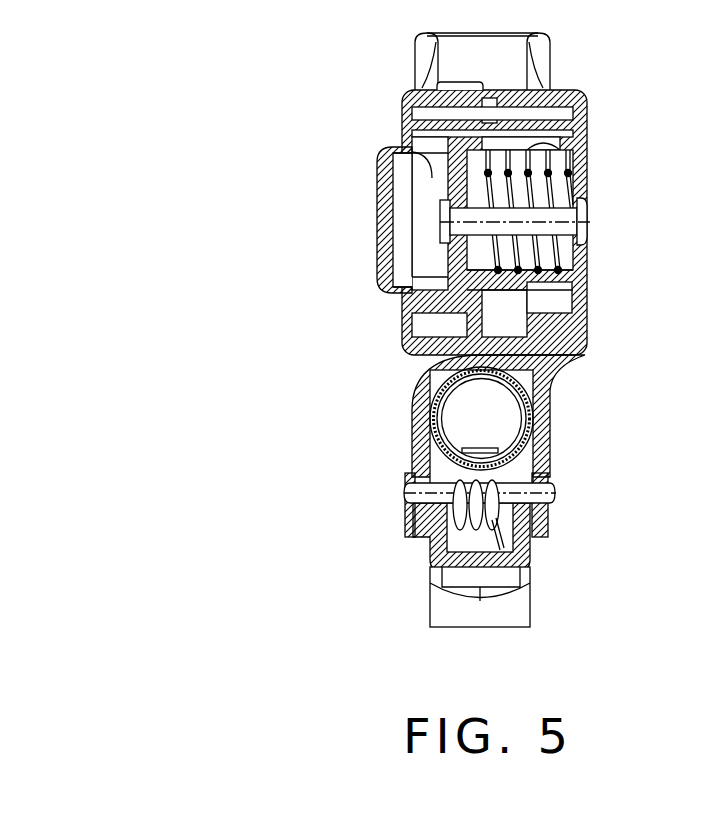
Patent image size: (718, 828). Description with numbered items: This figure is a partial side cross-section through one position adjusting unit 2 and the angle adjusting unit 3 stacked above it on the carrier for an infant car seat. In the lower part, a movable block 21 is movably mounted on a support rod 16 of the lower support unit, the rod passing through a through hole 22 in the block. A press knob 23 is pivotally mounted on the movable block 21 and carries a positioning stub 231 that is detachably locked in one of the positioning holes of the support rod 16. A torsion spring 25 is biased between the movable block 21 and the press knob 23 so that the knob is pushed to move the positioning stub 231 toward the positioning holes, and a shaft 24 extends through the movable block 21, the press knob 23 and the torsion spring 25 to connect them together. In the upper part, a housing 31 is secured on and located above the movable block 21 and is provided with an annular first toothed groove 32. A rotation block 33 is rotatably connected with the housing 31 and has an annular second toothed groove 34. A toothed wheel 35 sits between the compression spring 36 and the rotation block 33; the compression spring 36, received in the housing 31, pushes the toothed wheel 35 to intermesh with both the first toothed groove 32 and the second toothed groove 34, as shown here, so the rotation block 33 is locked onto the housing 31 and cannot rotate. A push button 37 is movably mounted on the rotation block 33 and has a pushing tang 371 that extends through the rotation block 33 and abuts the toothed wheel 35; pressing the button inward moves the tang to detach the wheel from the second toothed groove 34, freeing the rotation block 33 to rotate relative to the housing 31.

The position adjusting unit 2 is at (262, 506).
The angle adjusting unit 3 is at (262, 121).
The support rod 16 is at (418, 404).
The movable block 21 is at (550, 415).
The through hole 22 is at (523, 458).
The press knob 23 is at (435, 562).
The positioning stub 231 is at (430, 437).
The shaft 24 is at (404, 492).
The torsion spring 25 is at (455, 522).
The housing 31 is at (585, 97).
The first toothed groove 32 is at (467, 138).
The rotation block 33 is at (403, 92).
The second toothed groove 34 is at (400, 115).
The toothed wheel 35 is at (585, 327).
The compression spring 36 is at (568, 270).
The push button 37 is at (375, 230).
The pushing tang 371 is at (405, 153).